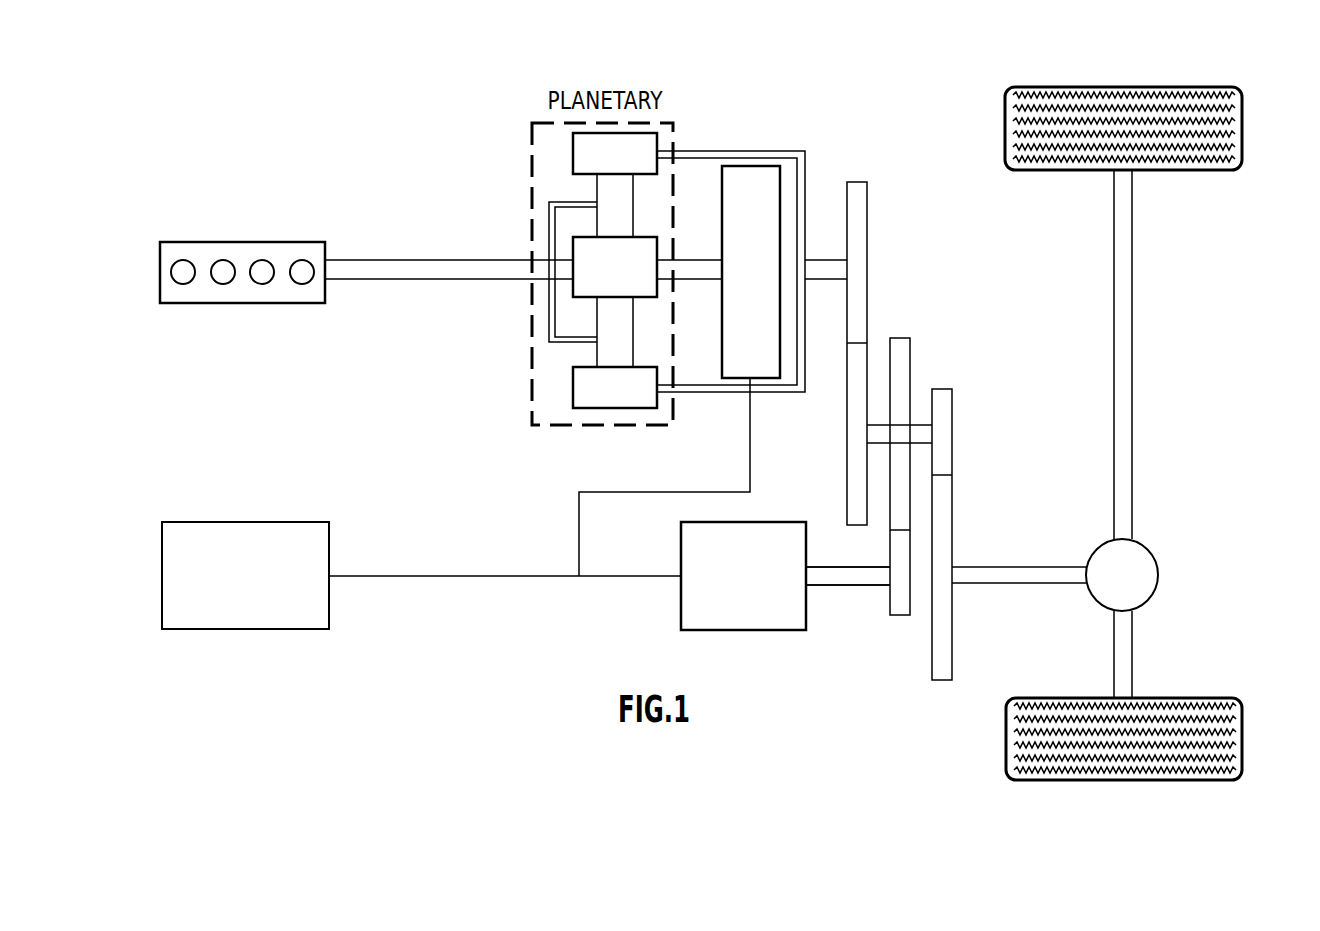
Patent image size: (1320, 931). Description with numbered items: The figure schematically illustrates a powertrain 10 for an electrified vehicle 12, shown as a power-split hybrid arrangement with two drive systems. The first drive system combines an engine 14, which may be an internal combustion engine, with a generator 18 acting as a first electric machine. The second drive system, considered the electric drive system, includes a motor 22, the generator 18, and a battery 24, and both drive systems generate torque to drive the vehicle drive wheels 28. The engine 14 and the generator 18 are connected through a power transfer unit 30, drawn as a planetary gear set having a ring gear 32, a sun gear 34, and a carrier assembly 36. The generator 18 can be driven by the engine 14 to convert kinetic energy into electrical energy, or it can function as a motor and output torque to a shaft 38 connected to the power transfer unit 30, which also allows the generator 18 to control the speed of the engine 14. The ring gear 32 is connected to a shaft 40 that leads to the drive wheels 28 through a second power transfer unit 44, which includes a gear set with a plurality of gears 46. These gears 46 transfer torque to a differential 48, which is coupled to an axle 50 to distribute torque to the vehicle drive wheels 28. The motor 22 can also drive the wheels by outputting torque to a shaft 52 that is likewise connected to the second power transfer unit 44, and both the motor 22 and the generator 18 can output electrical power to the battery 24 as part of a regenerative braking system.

The powertrain 10 is at (380, 146).
The electrified vehicle 12 is at (775, 78).
The engine 14 is at (172, 242).
The generator 18 is at (732, 166).
The motor 22 is at (806, 613).
The battery 24 is at (178, 522).
The vehicle drive wheels 28 is at (1242, 738).
The power transfer unit 30 is at (530, 386).
The ring gear 32 is at (573, 152).
The sun gear 34 is at (573, 243).
The carrier assembly 36 is at (549, 325).
The shaft 38 is at (691, 259).
The shaft 40 is at (826, 258).
The second power transfer unit 44 is at (948, 290).
The gears 46 is at (868, 307).
The differential 48 is at (1152, 596).
The axle 50 is at (1132, 346).
The shaft 52 is at (858, 585).